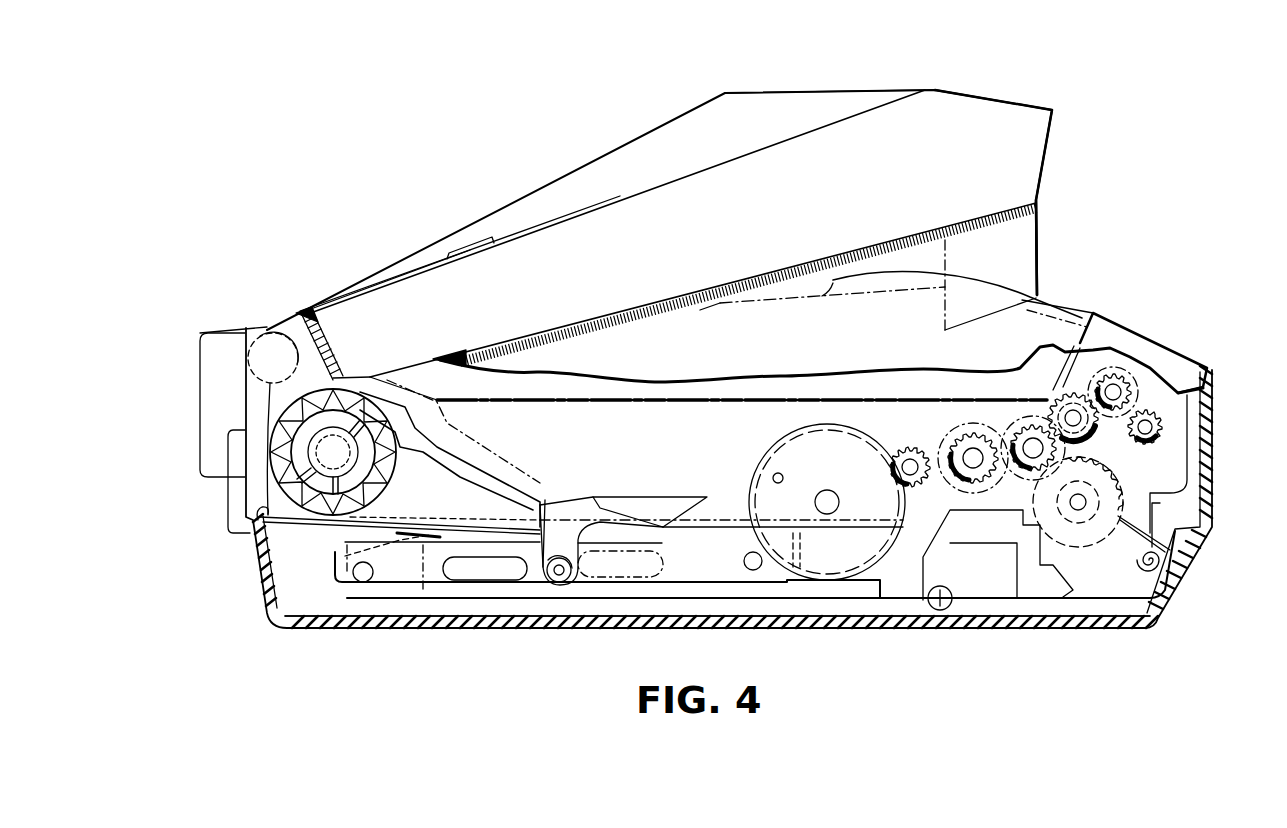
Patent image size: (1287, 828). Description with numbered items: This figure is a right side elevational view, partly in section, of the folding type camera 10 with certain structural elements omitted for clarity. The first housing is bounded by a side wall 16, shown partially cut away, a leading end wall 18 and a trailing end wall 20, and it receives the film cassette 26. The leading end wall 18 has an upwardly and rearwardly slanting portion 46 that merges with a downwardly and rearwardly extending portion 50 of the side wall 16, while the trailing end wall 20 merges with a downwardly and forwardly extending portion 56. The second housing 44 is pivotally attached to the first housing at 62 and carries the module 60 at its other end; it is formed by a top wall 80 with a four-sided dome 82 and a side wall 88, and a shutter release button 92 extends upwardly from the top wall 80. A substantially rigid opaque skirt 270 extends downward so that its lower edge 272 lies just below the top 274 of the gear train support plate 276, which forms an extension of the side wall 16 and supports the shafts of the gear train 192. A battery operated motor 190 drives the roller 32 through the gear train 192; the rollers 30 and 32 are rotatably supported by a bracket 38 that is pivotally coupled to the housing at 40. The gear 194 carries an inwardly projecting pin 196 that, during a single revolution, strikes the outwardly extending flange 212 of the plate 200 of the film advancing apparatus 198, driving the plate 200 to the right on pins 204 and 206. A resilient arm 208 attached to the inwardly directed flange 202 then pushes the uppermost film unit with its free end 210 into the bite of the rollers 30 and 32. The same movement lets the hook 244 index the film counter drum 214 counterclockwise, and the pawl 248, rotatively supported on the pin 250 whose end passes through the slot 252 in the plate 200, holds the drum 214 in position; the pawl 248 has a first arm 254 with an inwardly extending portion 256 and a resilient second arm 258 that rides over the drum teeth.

The folding type camera 10 is at (603, 131).
The four-sided dome 82 is at (690, 105).
The side wall 88 is at (993, 105).
The shutter release button 92 is at (470, 245).
The top wall 80 is at (583, 207).
The second housing 44 is at (356, 261).
The module 60 is at (1052, 232).
The pivot 62 is at (258, 325).
The downwardly and forwardly extending portion 56 is at (330, 365).
The lower edge 272 is at (757, 319).
The top 274 is at (833, 283).
The opaque skirt 270 is at (902, 257).
The gear train support plate 276 is at (786, 359).
The downwardly and rearwardly extending portion 50 is at (1072, 312).
The slanting portion 46 is at (1133, 337).
The side wall 16 is at (677, 400).
The gear 194 is at (850, 422).
The gear train 192 is at (998, 407).
The pin 196 is at (770, 473).
The drum 214 is at (290, 450).
The pawl 248 is at (551, 477).
The second arm 258 is at (460, 465).
The first arm 254 is at (690, 497).
The slot 252 is at (565, 557).
The inwardly extending portion 256 is at (716, 510).
The battery operated motor 190 is at (1178, 432).
The trailing end wall 20 is at (238, 510).
The flange 202 is at (520, 500).
The resilient arm 208 is at (490, 522).
The leading end wall 18 is at (1215, 500).
The roller 32 is at (1148, 510).
The outwardly extending flange 212 is at (827, 502).
The hook 244 is at (280, 528).
The free end 210 is at (350, 563).
The pin 206 is at (745, 563).
The bracket 38 is at (940, 572).
The pivot 40 is at (950, 597).
The roller 30 is at (1090, 562).
The pin 204 is at (365, 583).
The plate 200 is at (400, 597).
The film advancing apparatus 198 is at (534, 606).
The pin 250 is at (565, 583).
The film cassette 26 is at (740, 605).